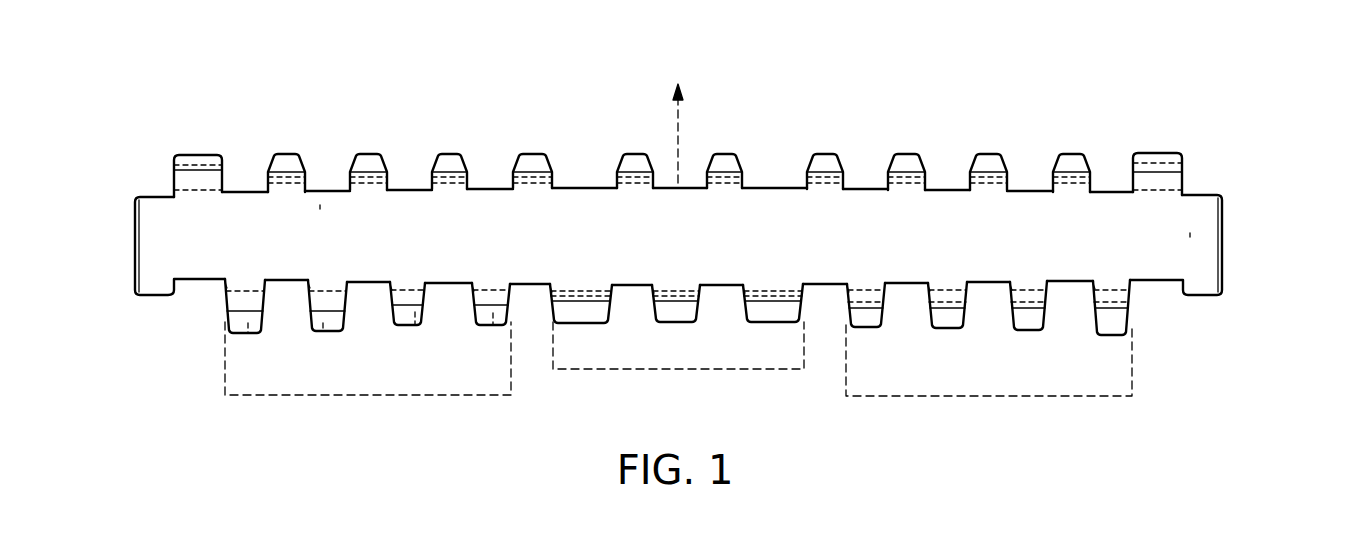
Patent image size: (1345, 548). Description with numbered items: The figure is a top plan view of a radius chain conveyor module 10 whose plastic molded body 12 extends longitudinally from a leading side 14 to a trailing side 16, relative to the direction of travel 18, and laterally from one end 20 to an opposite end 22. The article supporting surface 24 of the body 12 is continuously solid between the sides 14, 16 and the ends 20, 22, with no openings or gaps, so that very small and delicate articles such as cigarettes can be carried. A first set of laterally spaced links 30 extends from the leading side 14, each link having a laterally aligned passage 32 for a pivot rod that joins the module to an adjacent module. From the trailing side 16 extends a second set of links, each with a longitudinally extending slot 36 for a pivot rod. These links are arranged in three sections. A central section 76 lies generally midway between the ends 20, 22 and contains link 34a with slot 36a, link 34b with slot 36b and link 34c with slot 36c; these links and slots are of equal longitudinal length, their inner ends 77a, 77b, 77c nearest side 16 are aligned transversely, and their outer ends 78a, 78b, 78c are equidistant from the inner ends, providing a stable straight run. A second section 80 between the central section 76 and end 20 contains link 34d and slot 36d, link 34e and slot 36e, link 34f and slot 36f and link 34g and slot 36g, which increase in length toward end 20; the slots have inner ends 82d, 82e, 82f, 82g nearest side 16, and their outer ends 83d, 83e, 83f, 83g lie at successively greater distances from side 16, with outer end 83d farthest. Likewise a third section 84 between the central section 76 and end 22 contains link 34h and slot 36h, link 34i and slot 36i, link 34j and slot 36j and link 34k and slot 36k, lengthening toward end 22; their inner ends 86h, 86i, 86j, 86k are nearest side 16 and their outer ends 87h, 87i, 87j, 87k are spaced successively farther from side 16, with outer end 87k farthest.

The radius chain conveyor module 10 is at (125, 140).
The body 12 is at (222, 243).
The side 14 is at (403, 186).
The opposite side 16 is at (283, 280).
The direction of travel 18 is at (681, 112).
The end 20 is at (133, 241).
The opposite end 22 is at (1225, 262).
The article supporting surface 24 is at (320, 207).
The links of the first set 30 is at (287, 152).
The passage 32 is at (262, 173).
The link 34a is at (553, 318).
The link 34b is at (652, 318).
The link 34c is at (747, 318).
The link 34d is at (225, 322).
The link 34e is at (345, 333).
The link 34f is at (392, 320).
The link 34g is at (478, 318).
The link 34h is at (847, 318).
The link 34i is at (928, 318).
The link 34j is at (1012, 318).
The link 34k is at (1096, 318).
The slot 36 is at (216, 292).
The slot 36a is at (549, 290).
The slot 36b is at (648, 288).
The slot 36c is at (742, 288).
The slot 36d is at (225, 302).
The slot 36e is at (308, 305).
The slot 36f is at (388, 286).
The slot 36g is at (471, 287).
The slot 36h is at (842, 288).
The slot 36i is at (923, 288).
The slot 36j is at (1005, 288).
The slot 36k is at (1088, 288).
The first or central section 76 is at (553, 369).
The inner end 77a is at (617, 310).
The inner end 77b is at (705, 302).
The inner end 77c is at (783, 297).
The outer end 78a is at (580, 307).
The outer end 78b is at (668, 307).
The outer end 78c is at (753, 320).
The second section 80 is at (225, 377).
The inner end 82d is at (268, 300).
The inner end 82e is at (348, 300).
The inner end 82f is at (428, 304).
The inner end 82g is at (495, 325).
The outer end 83d is at (248, 323).
The outer end 83e is at (323, 323).
The outer end 83f is at (415, 312).
The outer end 83g is at (493, 313).
The third section 84 is at (1132, 352).
The inner end 86h is at (882, 298).
The inner end 86i is at (964, 298).
The inner end 86j is at (1031, 293).
The inner end 86k is at (1087, 295).
The outer end 87h is at (873, 308).
The outer end 87i is at (952, 308).
The outer end 87j is at (1033, 308).
The outer end 87k is at (1108, 318).